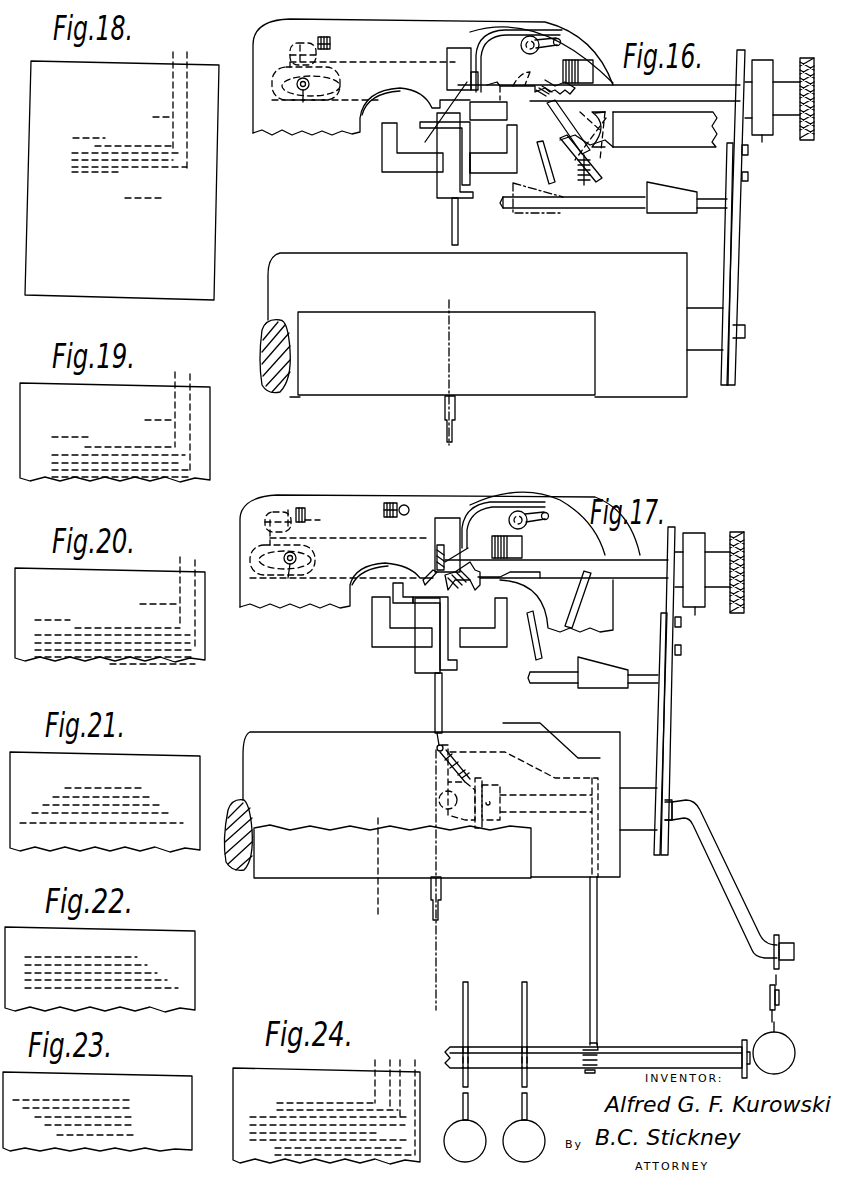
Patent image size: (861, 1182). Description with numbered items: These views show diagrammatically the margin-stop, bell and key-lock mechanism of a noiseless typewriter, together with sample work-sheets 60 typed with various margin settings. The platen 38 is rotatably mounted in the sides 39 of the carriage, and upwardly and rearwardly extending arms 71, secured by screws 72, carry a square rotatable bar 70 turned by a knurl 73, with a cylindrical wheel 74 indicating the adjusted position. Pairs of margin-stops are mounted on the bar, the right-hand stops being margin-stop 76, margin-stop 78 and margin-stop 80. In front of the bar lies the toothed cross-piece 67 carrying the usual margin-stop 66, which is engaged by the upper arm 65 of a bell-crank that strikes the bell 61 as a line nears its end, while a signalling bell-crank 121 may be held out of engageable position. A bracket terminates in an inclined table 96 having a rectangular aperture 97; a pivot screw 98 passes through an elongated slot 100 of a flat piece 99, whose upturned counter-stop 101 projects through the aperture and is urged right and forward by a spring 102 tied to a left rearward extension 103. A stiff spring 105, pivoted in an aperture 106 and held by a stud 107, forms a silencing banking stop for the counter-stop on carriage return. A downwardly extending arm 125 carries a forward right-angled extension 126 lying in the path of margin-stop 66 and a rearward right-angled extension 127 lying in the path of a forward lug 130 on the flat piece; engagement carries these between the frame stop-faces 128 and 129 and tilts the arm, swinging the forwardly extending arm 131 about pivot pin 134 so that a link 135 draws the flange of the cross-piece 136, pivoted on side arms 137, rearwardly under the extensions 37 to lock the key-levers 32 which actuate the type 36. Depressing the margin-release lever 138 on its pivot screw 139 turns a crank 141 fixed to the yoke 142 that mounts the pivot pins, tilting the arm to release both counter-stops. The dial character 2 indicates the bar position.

In FIG. 16, the dial indicia 2 is at (772, 97).
In FIG. 17, the dial indicia 2 is at (702, 570).
In FIG. 24, the key-levers 32 is at (468, 1012).
In FIG. 16, the type 36 is at (446, 400).
In FIG. 17, the type 36 is at (430, 888).
In FIG. 24, the extensions 37 is at (470, 1047).
In FIG. 16, the platen 38 is at (650, 398).
In FIG. 17, the platen 38 is at (612, 876).
In FIG. 16, the sides 39 is at (733, 284).
In FIG. 17, the sides 39 is at (668, 768).
In FIG. 16, the work-sheets 60 is at (545, 397).
In FIG. 17, the work-sheets 60 is at (495, 879).
In FIG. 18, the work-sheets 60 is at (215, 208).
In FIG. 19, the work-sheets 60 is at (210, 455).
In FIG. 20, the work-sheets 60 is at (205, 645).
In FIG. 21, the work-sheets 60 is at (200, 785).
In FIG. 22, the work-sheets 60 is at (195, 980).
In FIG. 23, the work-sheets 60 is at (192, 1100).
In FIG. 24, the work-sheets 60 is at (420, 1117).
In FIG. 16, the bell 61 is at (638, 129).
In FIG. 16, the upper arm 65 is at (548, 160).
In FIG. 17, the upper arm 65 is at (530, 650).
In FIG. 16, the margin-stop 66 is at (542, 212).
In FIG. 17, the margin-stop 66 is at (614, 662).
In FIG. 16, the toothed cross-piece 67 is at (612, 208).
In FIG. 17, the toothed cross-piece 67 is at (537, 683).
In FIG. 16, the rotatable bar 70 is at (700, 88).
In FIG. 17, the rotatable bar 70 is at (640, 558).
In FIG. 16, the arms 71 is at (744, 53).
In FIG. 17, the arms 71 is at (672, 528).
In FIG. 16, the screws 72 is at (748, 178).
In FIG. 17, the screws 72 is at (688, 642).
In FIG. 16, the knurl 73 is at (806, 142).
In FIG. 17, the knurl 73 is at (745, 606).
In FIG. 16, the cylindrical wheel 74 is at (762, 140).
In FIG. 17, the cylindrical wheel 74 is at (696, 612).
In FIG. 16, the margin-stop 76 is at (586, 62).
In FIG. 17, the margin-stop 76 is at (524, 545).
In FIG. 16, the margin-stop 78 is at (531, 81).
In FIG. 17, the margin-stop 78 is at (448, 592).
In FIG. 16, the margin-stop 80 is at (488, 112).
In FIG. 16, the inclined table 96 is at (321, 141).
In FIG. 17, the inclined table 96 is at (436, 497).
In FIG. 16, the aperture 97 is at (455, 47).
In FIG. 17, the aperture 97 is at (457, 518).
In FIG. 16, the pivot screw 98 is at (303, 101).
In FIG. 17, the pivot screw 98 is at (293, 574).
In FIG. 16, the flat piece 99 is at (362, 117).
In FIG. 17, the flat piece 99 is at (398, 557).
In FIG. 16, the elongated slot 100 is at (338, 86).
In FIG. 17, the elongated slot 100 is at (312, 560).
In FIG. 16, the counter-stop 101 is at (455, 75).
In FIG. 17, the counter-stop 101 is at (437, 538).
In FIG. 16, the spring 102 is at (329, 40).
In FIG. 17, the spring 102 is at (302, 507).
In FIG. 16, the left rearward extension 103 is at (288, 52).
In FIG. 17, the left rearward extension 103 is at (262, 522).
In FIG. 16, the stiff spring 105 is at (483, 57).
In FIG. 17, the stiff spring 105 is at (503, 525).
In FIG. 16, the aperture 106 is at (561, 38).
In FIG. 17, the aperture 106 is at (548, 512).
In FIG. 16, the stud 107 is at (563, 71).
In FIG. 17, the stud 107 is at (545, 540).
In FIG. 16, the signalling bell-crank 121 is at (548, 112).
In FIG. 17, the signalling bell-crank 121 is at (578, 608).
In FIG. 16, the arm 125 is at (437, 155).
In FIG. 17, the arm 125 is at (416, 664).
In FIG. 16, the forward right-angled extension 126 is at (472, 157).
In FIG. 17, the forward right-angled extension 126 is at (448, 630).
In FIG. 16, the rearward right-angled extension 127 is at (435, 145).
In FIG. 17, the rearward right-angled extension 127 is at (390, 598).
In FIG. 16, the right stop-face 128 is at (472, 162).
In FIG. 17, the right stop-face 128 is at (462, 638).
In FIG. 16, the left stop-face 129 is at (440, 162).
In FIG. 17, the left stop-face 129 is at (430, 638).
In FIG. 16, the forward lug 130 is at (441, 117).
In FIG. 17, the forward lug 130 is at (424, 572).
In FIG. 16, the forwardly extending arm 131 is at (452, 228).
In FIG. 17, the forwardly extending arm 131 is at (442, 718).
In FIG. 17, the pivot pin 134 is at (438, 800).
In FIG. 17, the link 135 is at (598, 938).
In FIG. 24, the link 135 is at (590, 1058).
In FIG. 24, the cross-piece 136 is at (627, 1050).
In FIG. 24, the side arms 137 is at (734, 1050).
In FIG. 24, the margin-release lever 138 is at (768, 1022).
In FIG. 24, the pivot screw 139 is at (768, 993).
In FIG. 17, the crank 141 is at (720, 858).
In FIG. 17, the yoke 142 is at (470, 790).